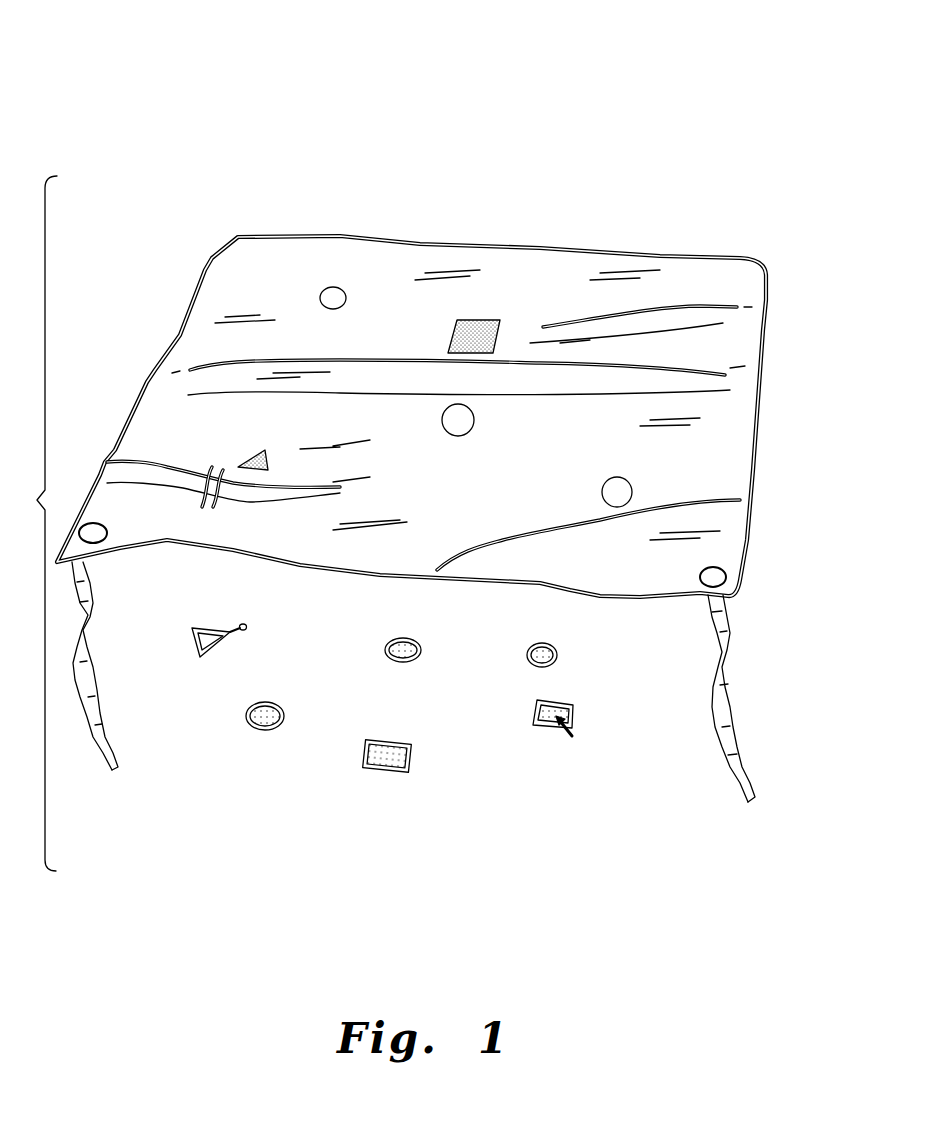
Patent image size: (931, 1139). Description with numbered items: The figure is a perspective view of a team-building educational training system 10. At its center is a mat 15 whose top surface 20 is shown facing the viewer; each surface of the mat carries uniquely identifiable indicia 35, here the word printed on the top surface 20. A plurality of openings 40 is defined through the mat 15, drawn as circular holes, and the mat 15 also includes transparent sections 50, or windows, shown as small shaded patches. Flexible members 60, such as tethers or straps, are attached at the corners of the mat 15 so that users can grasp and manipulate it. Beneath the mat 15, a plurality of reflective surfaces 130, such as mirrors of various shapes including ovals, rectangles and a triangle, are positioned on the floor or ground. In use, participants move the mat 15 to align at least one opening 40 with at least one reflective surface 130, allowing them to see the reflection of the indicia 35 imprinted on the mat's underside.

The team-building educational training system 10 is at (199, 116).
The mat 15 is at (281, 258).
The top surface 20 is at (650, 357).
The uniquely identifiable indicia 35 is at (533, 458).
The openings 40 is at (447, 407).
The transparent section 50 is at (478, 332).
The flexible member 60 is at (95, 677).
The reflective surfaces 130 is at (210, 657).